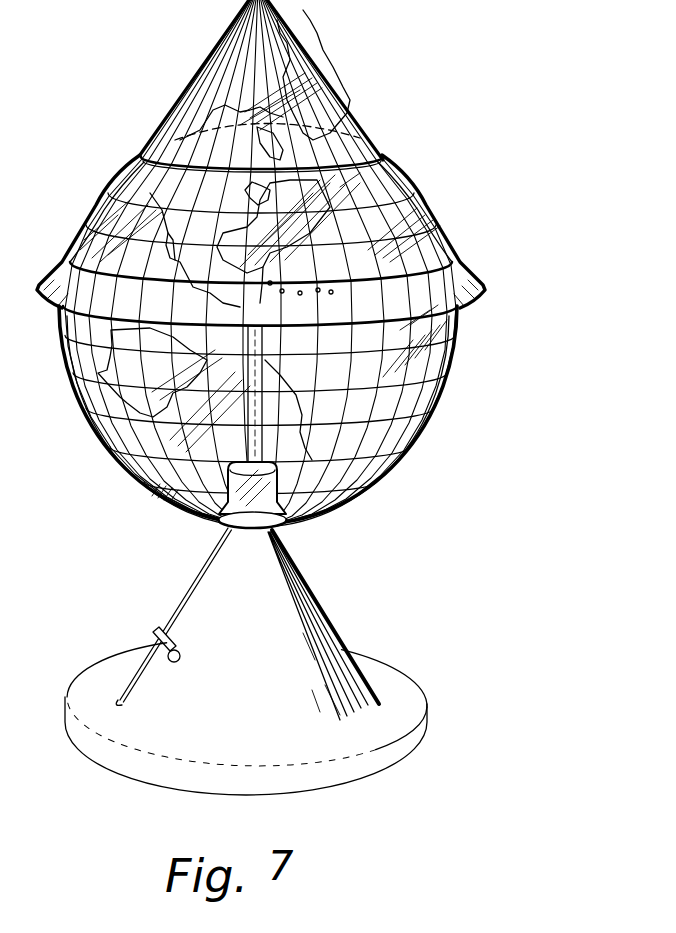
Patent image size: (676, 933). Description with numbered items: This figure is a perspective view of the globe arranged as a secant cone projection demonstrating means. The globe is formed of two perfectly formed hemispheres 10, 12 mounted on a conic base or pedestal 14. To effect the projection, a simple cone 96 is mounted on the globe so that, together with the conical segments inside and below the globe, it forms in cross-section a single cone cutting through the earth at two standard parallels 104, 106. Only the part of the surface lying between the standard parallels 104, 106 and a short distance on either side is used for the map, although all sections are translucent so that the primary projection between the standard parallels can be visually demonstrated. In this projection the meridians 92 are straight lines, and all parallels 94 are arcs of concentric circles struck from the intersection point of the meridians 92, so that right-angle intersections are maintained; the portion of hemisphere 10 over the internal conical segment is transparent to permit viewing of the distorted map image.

The hemisphere 10 is at (94, 194).
The hemisphere 12 is at (427, 423).
The conic base or pedestal 14 is at (228, 570).
The meridians 92 is at (337, 231).
The parallels 94 is at (368, 250).
The simple cone 96 is at (312, 65).
The standard parallel 104 is at (142, 155).
The standard parallel 106 is at (57, 305).